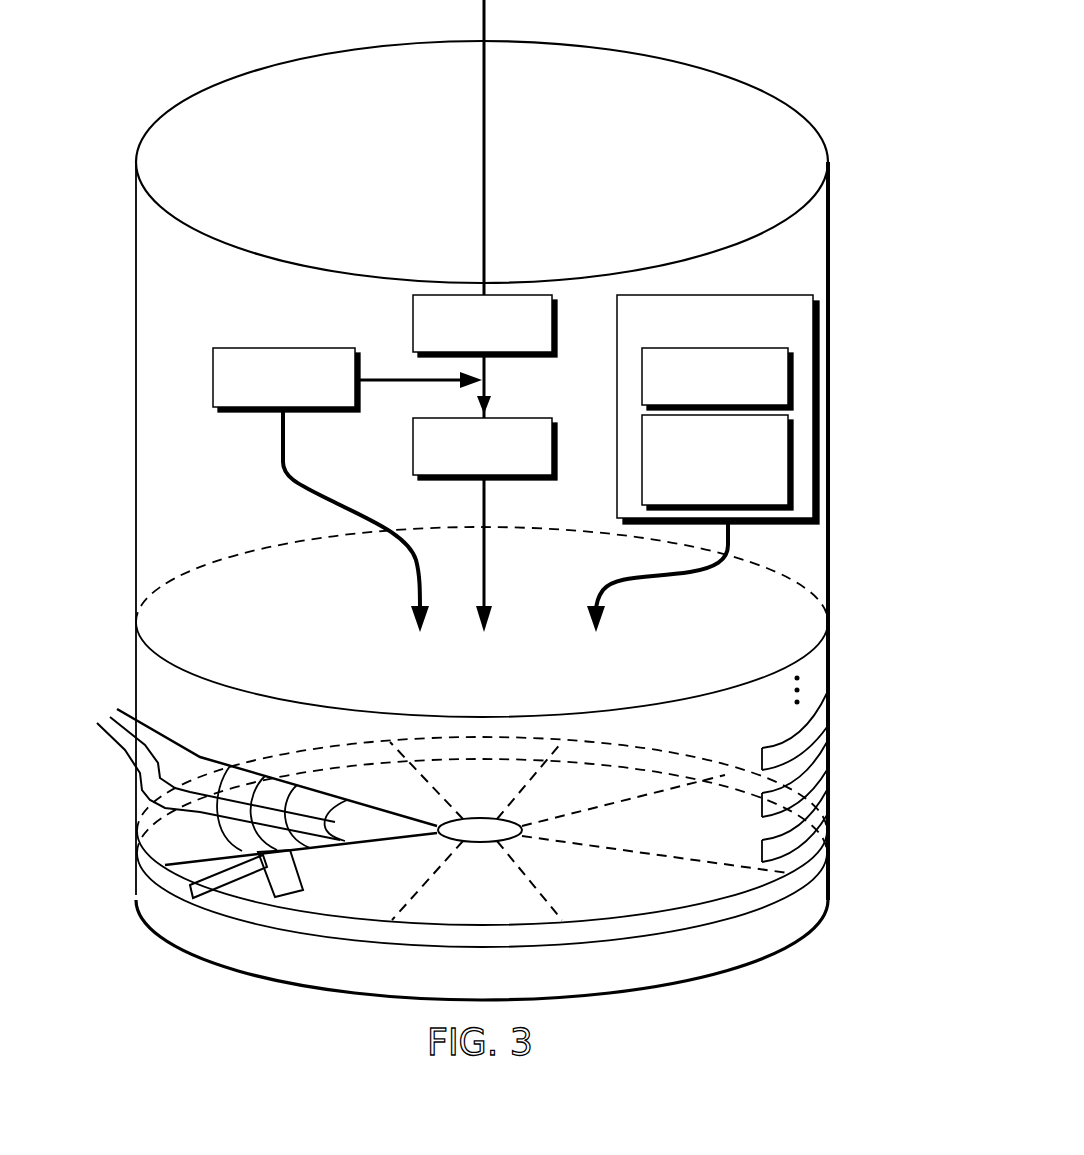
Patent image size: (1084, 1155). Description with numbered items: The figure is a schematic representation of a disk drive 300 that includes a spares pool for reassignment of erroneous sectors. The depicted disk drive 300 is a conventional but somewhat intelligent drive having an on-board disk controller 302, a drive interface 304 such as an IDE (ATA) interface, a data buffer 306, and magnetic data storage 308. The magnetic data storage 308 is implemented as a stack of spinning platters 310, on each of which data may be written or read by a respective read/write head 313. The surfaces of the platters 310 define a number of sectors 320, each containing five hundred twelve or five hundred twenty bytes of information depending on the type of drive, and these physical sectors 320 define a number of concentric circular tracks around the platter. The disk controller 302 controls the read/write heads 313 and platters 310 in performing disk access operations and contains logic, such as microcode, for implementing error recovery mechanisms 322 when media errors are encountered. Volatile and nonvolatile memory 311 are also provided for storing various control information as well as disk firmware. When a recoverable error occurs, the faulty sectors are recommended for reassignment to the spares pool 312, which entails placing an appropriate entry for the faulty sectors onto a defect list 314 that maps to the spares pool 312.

The disk drive 300 is at (805, 73).
The disk controller 302 is at (703, 463).
The drive interface 304 is at (485, 326).
The data buffer 306 is at (485, 449).
The magnetic data storage 308 is at (482, 632).
The platters 310 is at (790, 750).
The memory 311 is at (347, 490).
The spares pool 312 is at (482, 954).
The read/write heads 313 is at (236, 921).
The defect list 314 is at (717, 379).
The sectors 320 is at (260, 782).
The error recovery mechanisms 322 is at (717, 462).